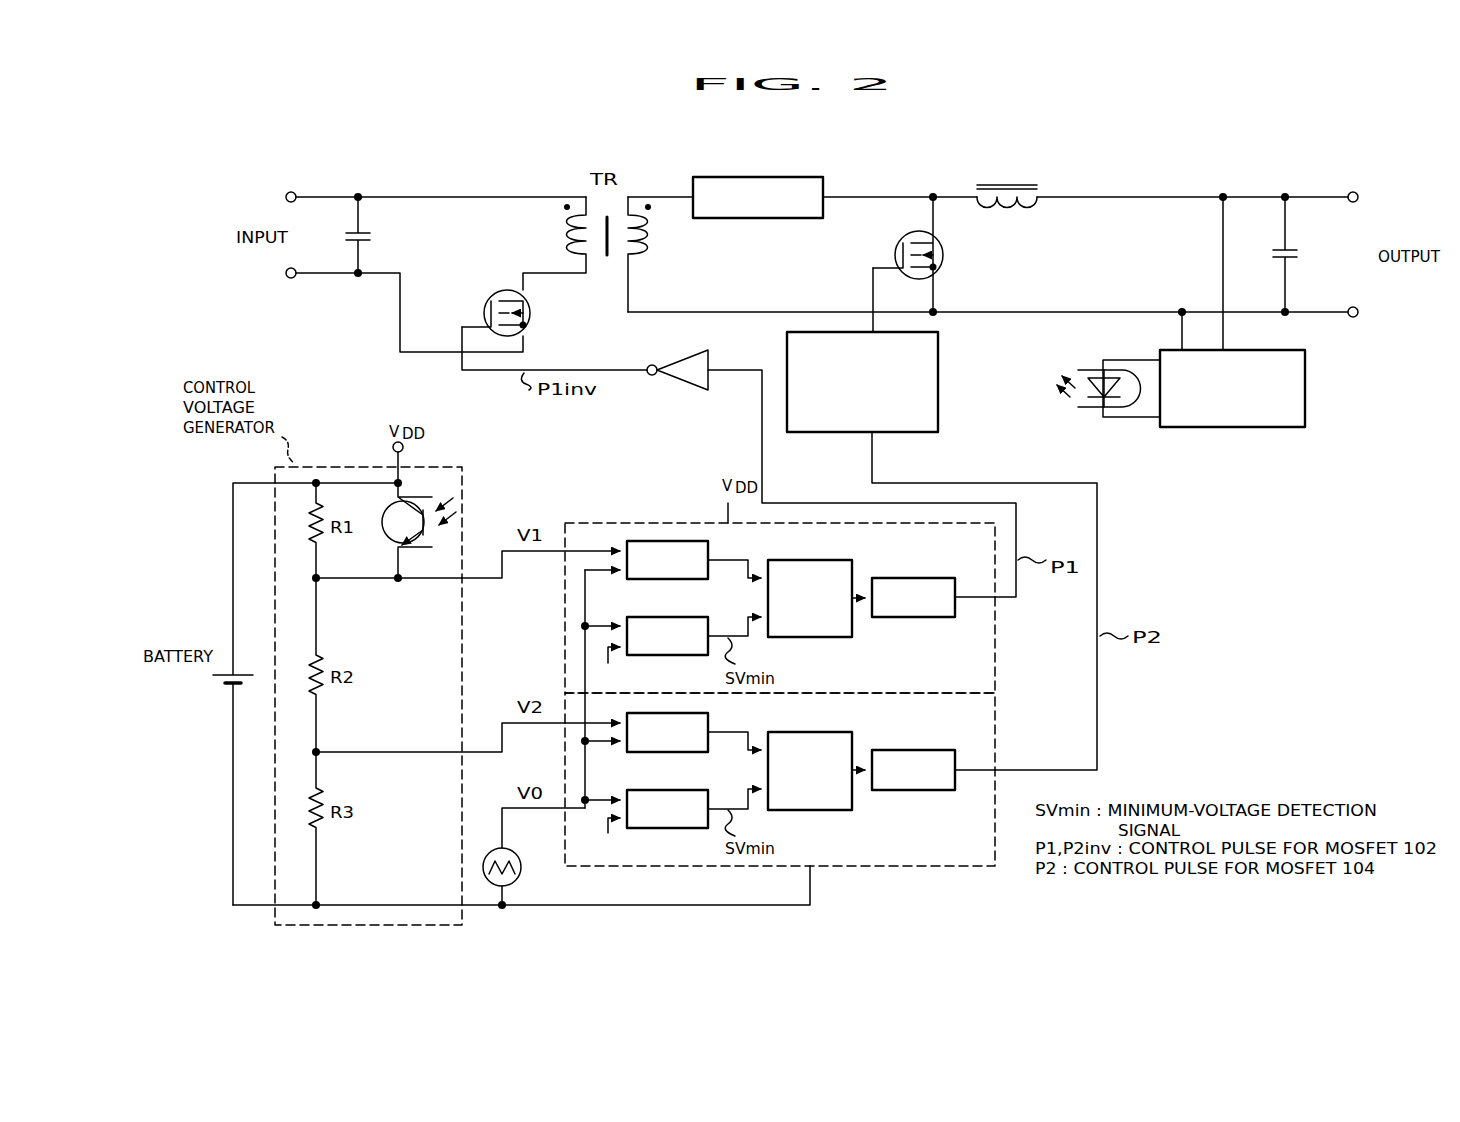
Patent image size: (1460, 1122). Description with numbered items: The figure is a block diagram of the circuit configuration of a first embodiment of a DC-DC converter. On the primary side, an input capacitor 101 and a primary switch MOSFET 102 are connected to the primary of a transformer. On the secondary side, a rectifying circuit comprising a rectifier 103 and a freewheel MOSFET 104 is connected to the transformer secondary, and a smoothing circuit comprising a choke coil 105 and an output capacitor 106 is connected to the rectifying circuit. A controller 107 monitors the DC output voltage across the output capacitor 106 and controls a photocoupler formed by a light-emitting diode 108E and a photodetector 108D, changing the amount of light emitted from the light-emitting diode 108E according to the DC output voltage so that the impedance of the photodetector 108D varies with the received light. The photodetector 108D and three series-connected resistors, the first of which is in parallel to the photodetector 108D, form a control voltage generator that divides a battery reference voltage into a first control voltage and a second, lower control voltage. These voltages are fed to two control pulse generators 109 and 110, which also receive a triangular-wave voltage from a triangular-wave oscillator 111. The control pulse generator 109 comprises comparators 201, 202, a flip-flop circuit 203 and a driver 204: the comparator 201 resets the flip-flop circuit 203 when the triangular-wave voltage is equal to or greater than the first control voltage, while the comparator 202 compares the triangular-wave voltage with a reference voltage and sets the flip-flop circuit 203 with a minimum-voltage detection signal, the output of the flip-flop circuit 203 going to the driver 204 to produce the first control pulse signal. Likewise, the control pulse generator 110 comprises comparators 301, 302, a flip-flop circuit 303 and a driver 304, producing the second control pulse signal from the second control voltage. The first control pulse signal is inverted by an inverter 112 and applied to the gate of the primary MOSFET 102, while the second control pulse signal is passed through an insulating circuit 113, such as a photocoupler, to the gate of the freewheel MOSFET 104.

The input capacitor 101 is at (372, 239).
The primary switch MOSFET 102 is at (531, 318).
The rectifier 103 is at (751, 178).
The freewheel MOSFET 104 is at (943, 256).
The choke coil 105 is at (976, 183).
The output capacitor 106 is at (1320, 243).
The controller 107 is at (1245, 428).
The light-emitting diode 108E is at (1082, 367).
The photodetector 108D is at (420, 500).
The control pulse generator 109 is at (632, 522).
The control pulse generator 110 is at (910, 870).
The triangular-wave oscillator 111 is at (521, 877).
The inverter 112 is at (673, 344).
The insulating circuit 113 is at (940, 377).
The comparator 201 is at (710, 549).
The comparator 202 is at (669, 618).
The flip-flop circuit 203 is at (829, 561).
The driver 204 is at (913, 578).
The comparator 301 is at (710, 720).
The comparator 302 is at (669, 792).
The flip-flop circuit 303 is at (829, 733).
The driver 304 is at (913, 751).